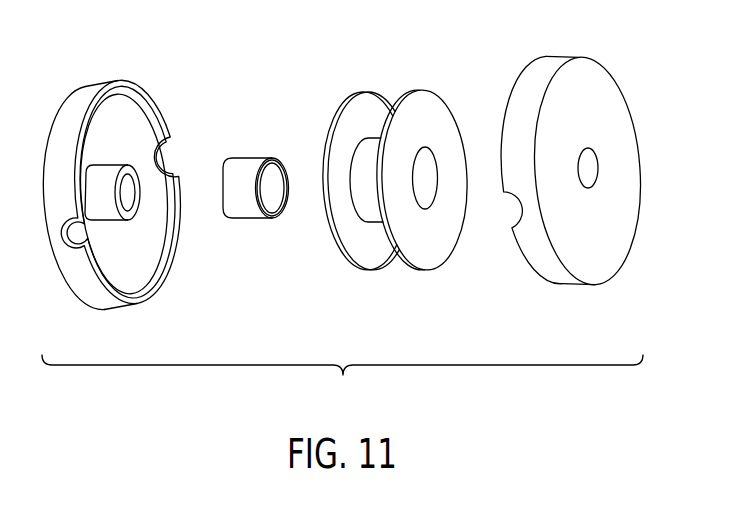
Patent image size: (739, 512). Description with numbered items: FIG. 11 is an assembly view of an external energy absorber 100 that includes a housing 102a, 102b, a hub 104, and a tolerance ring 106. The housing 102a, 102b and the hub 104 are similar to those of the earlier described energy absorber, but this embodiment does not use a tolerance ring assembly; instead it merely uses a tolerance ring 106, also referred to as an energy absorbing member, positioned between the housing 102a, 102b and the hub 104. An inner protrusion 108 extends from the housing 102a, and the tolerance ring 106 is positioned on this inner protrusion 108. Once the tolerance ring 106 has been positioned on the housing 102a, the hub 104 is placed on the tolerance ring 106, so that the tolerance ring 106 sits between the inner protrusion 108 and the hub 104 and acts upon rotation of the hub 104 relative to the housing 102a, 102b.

The external energy absorber 100 is at (342, 382).
The housing 102a is at (100, 78).
The housing 102b is at (605, 58).
The hub 104 is at (412, 89).
The tolerance ring 106 is at (255, 157).
The inner protrusion 108 is at (118, 166).